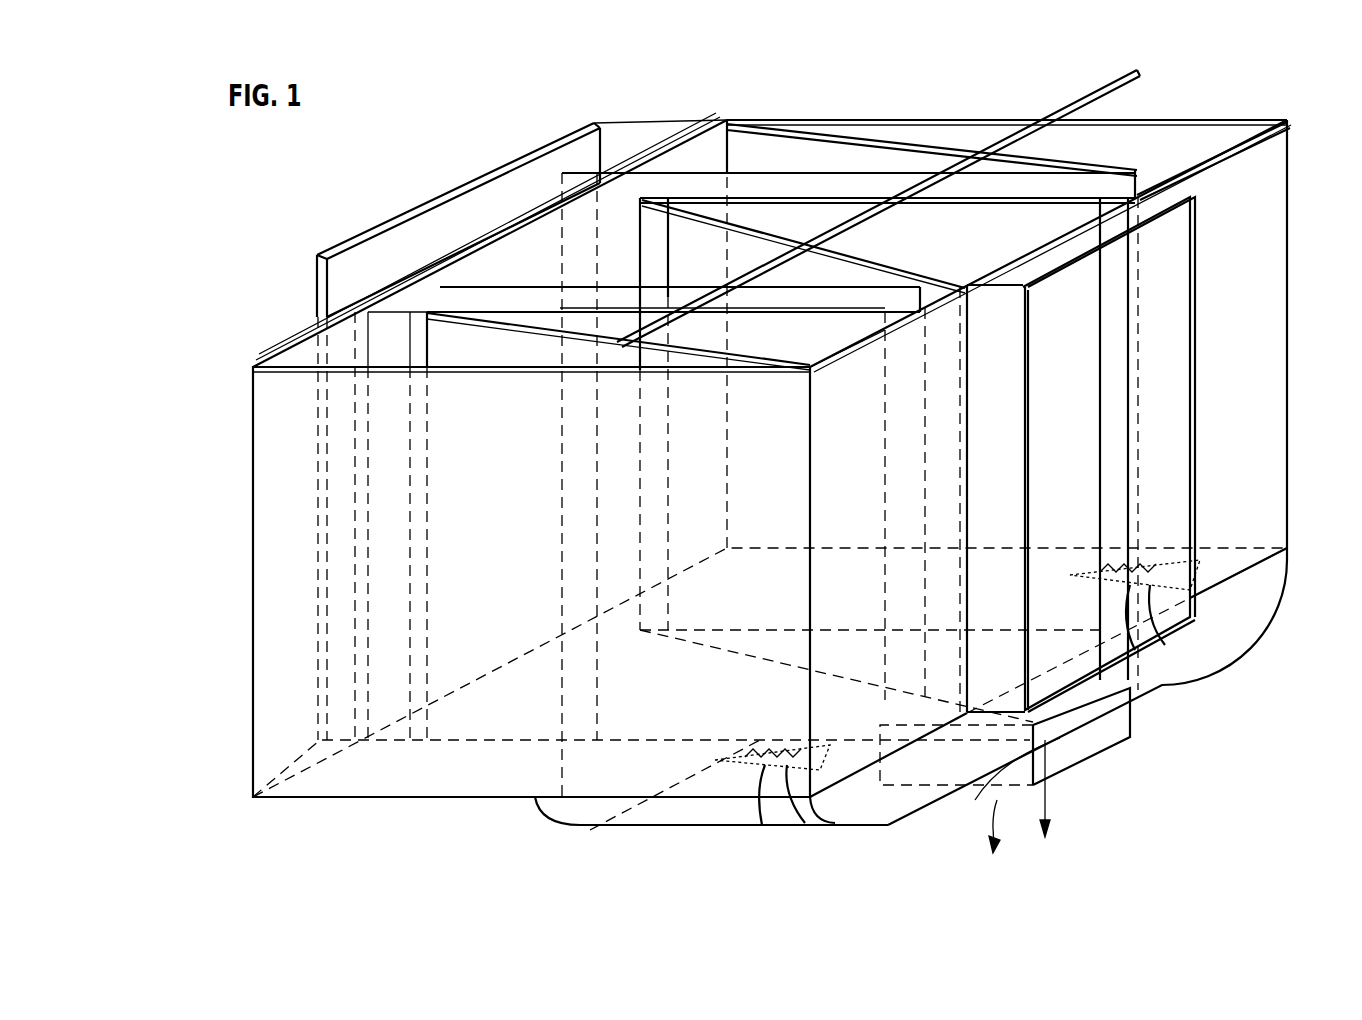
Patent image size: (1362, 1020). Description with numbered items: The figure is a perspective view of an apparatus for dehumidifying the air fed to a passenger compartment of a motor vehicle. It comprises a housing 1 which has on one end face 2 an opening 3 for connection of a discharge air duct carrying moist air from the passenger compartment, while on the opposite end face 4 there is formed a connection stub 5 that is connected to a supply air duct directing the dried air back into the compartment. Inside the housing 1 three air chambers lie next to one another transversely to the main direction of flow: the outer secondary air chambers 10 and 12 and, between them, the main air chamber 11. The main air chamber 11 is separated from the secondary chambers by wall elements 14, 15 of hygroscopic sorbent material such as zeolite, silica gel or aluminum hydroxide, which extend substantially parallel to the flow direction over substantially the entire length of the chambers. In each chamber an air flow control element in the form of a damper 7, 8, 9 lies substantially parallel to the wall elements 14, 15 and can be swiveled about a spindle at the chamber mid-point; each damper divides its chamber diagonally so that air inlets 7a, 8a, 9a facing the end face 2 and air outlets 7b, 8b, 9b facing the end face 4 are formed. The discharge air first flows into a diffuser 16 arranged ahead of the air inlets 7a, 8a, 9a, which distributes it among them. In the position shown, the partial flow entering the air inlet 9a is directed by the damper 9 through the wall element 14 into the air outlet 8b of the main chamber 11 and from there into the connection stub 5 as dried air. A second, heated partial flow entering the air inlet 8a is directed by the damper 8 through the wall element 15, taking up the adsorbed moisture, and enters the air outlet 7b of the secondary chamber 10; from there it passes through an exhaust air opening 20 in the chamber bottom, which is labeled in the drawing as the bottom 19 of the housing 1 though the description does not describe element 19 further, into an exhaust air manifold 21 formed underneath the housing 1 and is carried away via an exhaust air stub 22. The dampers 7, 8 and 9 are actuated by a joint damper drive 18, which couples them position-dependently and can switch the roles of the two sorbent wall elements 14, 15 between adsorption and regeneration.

The housing 1 is at (1288, 308).
The end face 2 is at (216, 466).
The opening 3 is at (452, 228).
The end face 4 is at (1262, 196).
The connection stub 5 is at (1069, 436).
The damper 7 is at (545, 335).
The air inlet 7a is at (466, 360).
The air outlet 7b is at (857, 425).
The damper 8 is at (866, 262).
The air inlet 8a is at (704, 266).
The air outlet 8b is at (979, 255).
The damper 9 is at (1048, 160).
The air inlet 9a is at (776, 165).
The air outlet 9b is at (1206, 155).
The secondary air chamber 10 is at (343, 358).
The main air chamber 11 is at (627, 232).
The secondary air chamber 12 is at (1143, 146).
The wall element 14 is at (1027, 232).
The wall element 15 is at (816, 347).
The diffuser 16 is at (657, 147).
The damper drive 18 is at (1088, 94).
The bottom wall 19 is at (430, 798).
The exhaust air opening 20 is at (1205, 585).
The exhaust air manifold 21 is at (908, 805).
The exhaust air stub 22 is at (1078, 748).